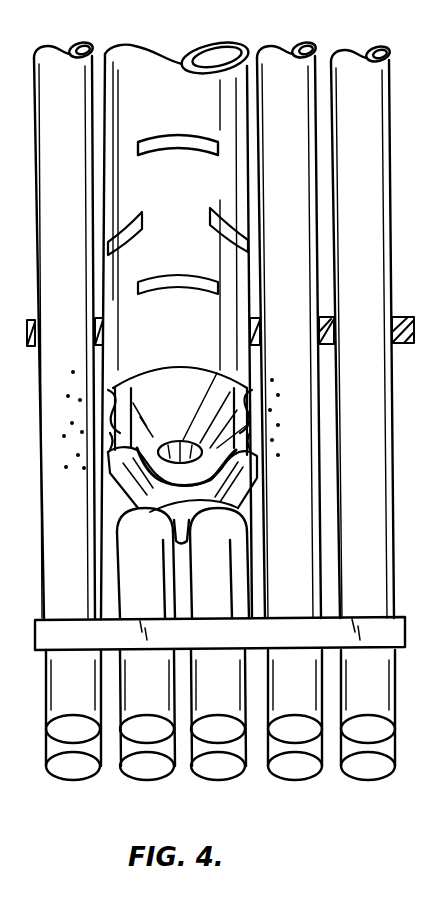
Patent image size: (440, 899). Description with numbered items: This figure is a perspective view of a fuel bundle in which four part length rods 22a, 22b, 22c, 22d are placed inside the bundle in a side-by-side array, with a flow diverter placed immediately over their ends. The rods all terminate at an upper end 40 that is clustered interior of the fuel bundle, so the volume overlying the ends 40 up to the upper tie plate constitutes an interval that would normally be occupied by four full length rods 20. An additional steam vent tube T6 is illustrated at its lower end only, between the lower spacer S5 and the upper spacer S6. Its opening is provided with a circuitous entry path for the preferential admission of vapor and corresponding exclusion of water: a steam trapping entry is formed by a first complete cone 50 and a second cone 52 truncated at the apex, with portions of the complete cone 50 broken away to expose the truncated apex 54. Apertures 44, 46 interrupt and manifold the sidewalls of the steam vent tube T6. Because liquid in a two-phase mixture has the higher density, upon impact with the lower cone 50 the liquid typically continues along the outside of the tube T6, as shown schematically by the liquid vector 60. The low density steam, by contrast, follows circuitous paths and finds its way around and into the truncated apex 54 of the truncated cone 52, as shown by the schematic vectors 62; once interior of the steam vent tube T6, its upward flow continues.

The steam vent tube T6 is at (238, 42).
The upper spacer S6 is at (398, 318).
The lower spacer S5 is at (406, 620).
The aperture 46 is at (137, 212).
The aperture 44 is at (165, 272).
The second cone truncated at the apex 52 is at (199, 389).
The schematic vectors 62 is at (128, 403).
The truncated apex 54 is at (188, 440).
The first complete cone 50 is at (233, 471).
The upper end 40 is at (216, 501).
The vector 60 is at (78, 450).
The full length rod 20 is at (80, 568).
The part length rod 22a is at (156, 687).
The part length rod 22b is at (150, 768).
The part length rod 22c is at (227, 687).
The part length rod 22d is at (220, 768).